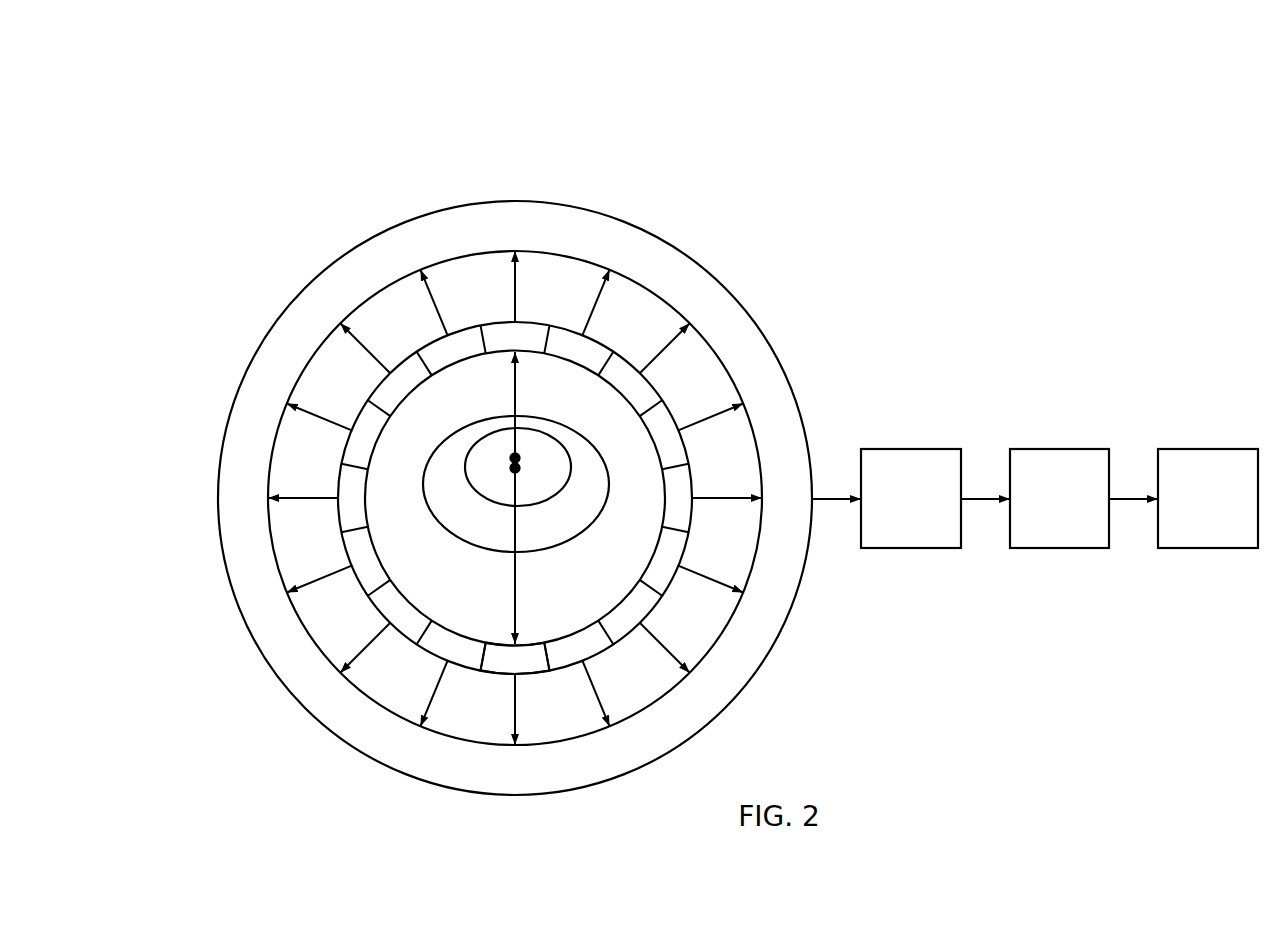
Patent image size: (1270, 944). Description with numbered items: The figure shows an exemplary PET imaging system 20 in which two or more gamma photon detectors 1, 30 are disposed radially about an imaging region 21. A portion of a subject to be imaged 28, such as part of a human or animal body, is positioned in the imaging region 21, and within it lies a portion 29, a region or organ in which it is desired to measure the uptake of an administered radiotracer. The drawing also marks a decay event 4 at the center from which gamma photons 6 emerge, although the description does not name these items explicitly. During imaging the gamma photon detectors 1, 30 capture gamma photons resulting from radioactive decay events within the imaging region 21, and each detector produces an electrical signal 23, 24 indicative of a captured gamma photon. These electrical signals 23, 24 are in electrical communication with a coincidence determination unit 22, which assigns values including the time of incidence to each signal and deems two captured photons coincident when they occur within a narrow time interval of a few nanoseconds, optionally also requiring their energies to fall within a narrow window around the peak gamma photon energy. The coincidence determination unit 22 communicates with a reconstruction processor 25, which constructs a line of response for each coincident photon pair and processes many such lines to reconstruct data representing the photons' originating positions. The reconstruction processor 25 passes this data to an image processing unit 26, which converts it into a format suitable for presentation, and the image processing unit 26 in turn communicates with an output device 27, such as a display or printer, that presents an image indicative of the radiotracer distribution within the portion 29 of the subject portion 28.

The gamma photon detector 1 is at (518, 335).
The annihilation point 4 is at (508, 448).
The gamma photon 6 is at (511, 487).
The PET imaging system 20 is at (848, 140).
The imaging region 21 is at (414, 443).
The coincidence determination unit 22 is at (752, 345).
The electrical signal 23 is at (518, 280).
The electrical signal 24 is at (512, 703).
The reconstruction processor 25 is at (897, 470).
The image processing unit 26 is at (1037, 470).
The output device 27 is at (1181, 472).
The portion of a subject to be imaged 28 is at (588, 437).
The portion 29 is at (550, 428).
The gamma photon detector 30 is at (508, 665).